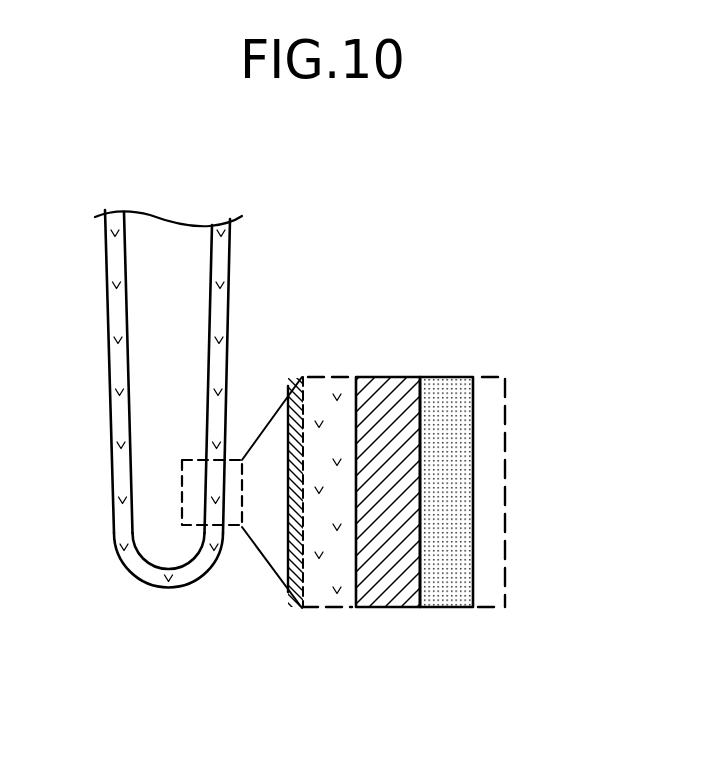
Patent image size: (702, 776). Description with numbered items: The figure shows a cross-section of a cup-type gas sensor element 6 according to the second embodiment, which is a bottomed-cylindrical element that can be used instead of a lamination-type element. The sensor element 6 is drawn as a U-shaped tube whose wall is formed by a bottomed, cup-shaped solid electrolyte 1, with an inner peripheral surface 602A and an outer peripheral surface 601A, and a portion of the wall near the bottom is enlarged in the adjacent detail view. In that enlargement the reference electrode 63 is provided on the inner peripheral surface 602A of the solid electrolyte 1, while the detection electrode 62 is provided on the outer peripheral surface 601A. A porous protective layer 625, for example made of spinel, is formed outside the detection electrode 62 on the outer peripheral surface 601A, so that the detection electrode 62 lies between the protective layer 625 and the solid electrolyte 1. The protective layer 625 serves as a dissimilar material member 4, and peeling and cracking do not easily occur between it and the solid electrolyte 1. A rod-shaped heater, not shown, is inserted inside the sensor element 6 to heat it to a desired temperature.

The sensor element 6 is at (244, 349).
The inner peripheral surface 602A is at (126, 280).
The outer peripheral surface 601A is at (232, 258).
The reference electrode 63 is at (289, 433).
The solid electrolyte 1 is at (320, 587).
The detection electrode 62 is at (390, 568).
The protective layer 625 is at (480, 443).
The dissimilar material member 4 is at (447, 405).